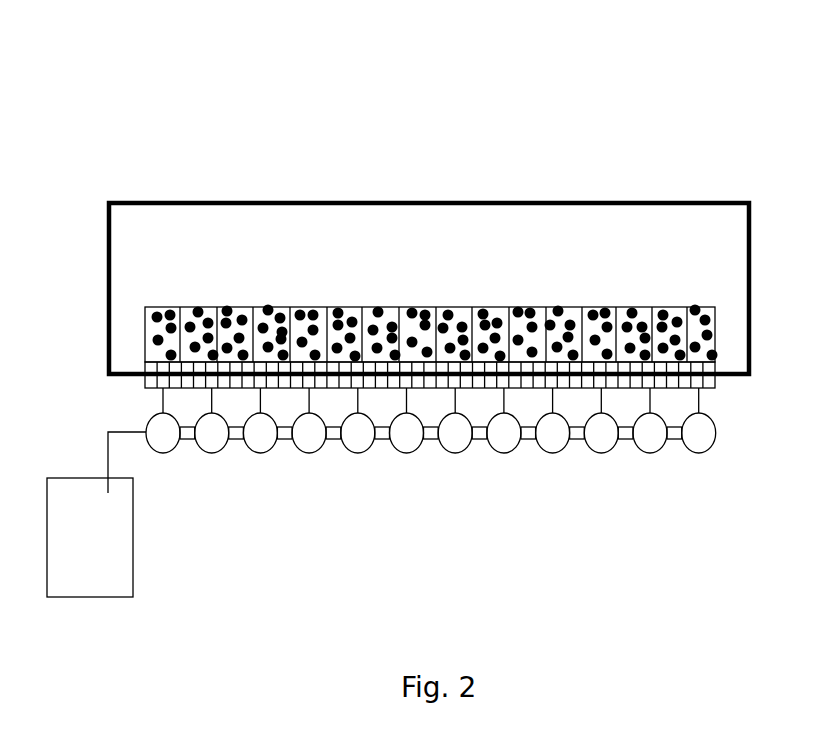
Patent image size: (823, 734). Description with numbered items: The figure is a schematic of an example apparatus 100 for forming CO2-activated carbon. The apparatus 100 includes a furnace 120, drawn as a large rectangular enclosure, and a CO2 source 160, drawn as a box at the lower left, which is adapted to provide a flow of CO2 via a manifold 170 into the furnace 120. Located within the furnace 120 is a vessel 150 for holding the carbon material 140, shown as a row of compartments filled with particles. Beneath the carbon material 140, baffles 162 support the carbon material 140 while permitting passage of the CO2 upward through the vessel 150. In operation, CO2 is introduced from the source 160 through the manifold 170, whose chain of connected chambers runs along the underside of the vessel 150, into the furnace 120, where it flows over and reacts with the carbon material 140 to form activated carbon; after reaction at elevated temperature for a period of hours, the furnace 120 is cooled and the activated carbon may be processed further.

The apparatus 100 is at (549, 126).
The furnace 120 is at (252, 202).
The carbon material 140 is at (270, 310).
The vessel 150 is at (541, 307).
The CO2 source 160 is at (133, 518).
The baffles 162 is at (634, 400).
The manifold 170 is at (416, 450).